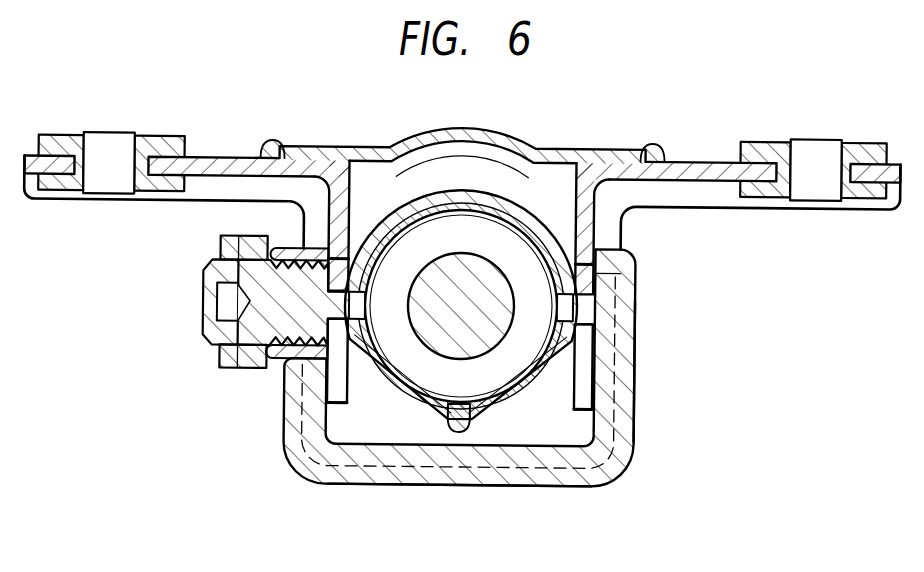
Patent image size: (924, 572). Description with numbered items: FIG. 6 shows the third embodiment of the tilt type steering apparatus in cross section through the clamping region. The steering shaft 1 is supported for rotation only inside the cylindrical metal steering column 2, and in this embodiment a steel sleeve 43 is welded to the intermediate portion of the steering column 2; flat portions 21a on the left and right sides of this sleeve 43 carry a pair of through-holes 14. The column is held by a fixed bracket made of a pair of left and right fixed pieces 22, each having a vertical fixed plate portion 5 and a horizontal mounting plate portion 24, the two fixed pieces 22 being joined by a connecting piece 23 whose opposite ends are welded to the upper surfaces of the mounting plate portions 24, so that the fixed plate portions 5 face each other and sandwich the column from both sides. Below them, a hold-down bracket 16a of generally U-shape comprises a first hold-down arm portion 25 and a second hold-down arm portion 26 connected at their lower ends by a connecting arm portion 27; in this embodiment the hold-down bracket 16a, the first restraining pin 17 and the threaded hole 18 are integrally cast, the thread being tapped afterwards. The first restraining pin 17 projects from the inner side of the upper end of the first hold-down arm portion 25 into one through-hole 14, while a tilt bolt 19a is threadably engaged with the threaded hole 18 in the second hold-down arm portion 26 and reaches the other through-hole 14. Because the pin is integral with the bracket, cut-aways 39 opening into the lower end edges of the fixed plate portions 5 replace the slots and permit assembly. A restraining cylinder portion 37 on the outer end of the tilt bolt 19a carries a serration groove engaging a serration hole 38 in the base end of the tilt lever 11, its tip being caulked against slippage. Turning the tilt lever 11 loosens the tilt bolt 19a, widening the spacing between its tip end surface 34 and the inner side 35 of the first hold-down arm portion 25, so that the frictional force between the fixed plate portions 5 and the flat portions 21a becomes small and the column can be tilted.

The steering shaft 1 is at (468, 263).
The steering column 2 is at (380, 220).
The fixed plate portions 5 is at (334, 214).
The tilt lever 11 is at (228, 361).
The through-holes 14 is at (364, 306).
The hold-down bracket 16a is at (546, 477).
The first restraining pin 17 is at (589, 338).
The threaded hole 18 is at (277, 362).
The tilt bolt 19a is at (250, 377).
The flat portions 21a is at (263, 262).
The fixed pieces 22 is at (245, 166).
The connecting piece 23 is at (432, 136).
The mounting plate portions 24 is at (200, 163).
The first hold-down arm portion 25 is at (632, 383).
The second hold-down arm portion 26 is at (315, 406).
The connecting arm portion 27 is at (418, 481).
The tip end surface 34 is at (350, 392).
The inner side 35 is at (593, 344).
The restraining cylinder portion 37 is at (217, 298).
The serration hole 38 is at (210, 315).
The cut-aways 39 is at (312, 246).
The sleeve 43 is at (532, 207).